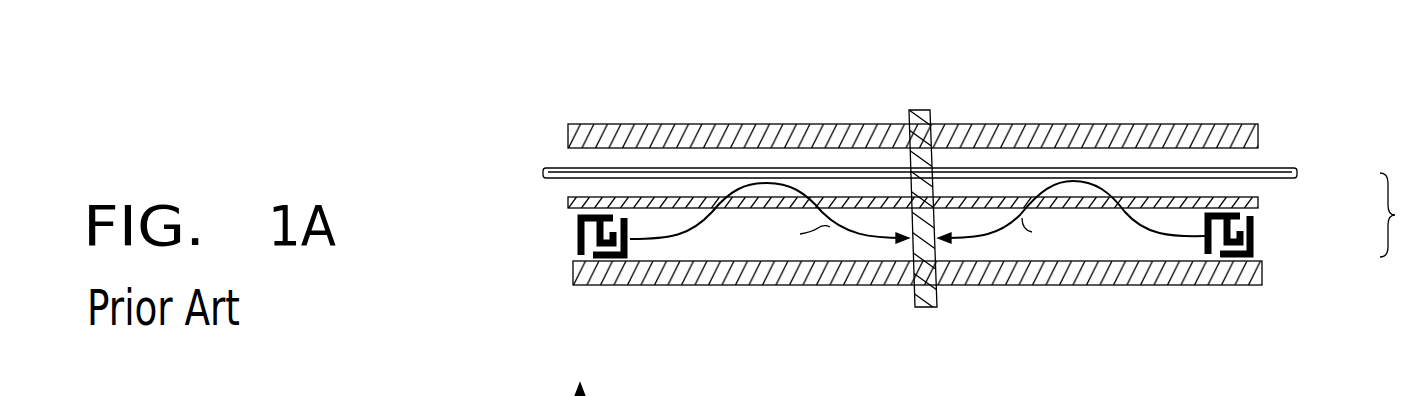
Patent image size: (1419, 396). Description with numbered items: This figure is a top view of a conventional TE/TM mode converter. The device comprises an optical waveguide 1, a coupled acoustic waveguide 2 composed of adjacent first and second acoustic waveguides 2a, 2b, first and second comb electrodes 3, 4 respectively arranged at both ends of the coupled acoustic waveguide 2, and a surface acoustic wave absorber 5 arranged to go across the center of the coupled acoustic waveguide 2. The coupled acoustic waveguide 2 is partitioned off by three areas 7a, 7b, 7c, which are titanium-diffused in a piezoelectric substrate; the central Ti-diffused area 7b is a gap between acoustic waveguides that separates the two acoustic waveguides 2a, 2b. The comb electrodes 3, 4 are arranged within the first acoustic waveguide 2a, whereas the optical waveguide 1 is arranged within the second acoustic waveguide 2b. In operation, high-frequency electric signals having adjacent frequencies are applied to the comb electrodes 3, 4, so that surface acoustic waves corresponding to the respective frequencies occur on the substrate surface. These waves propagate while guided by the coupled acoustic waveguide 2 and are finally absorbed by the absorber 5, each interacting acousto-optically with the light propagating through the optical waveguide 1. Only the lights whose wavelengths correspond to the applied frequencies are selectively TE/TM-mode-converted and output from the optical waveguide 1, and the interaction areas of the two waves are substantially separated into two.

The optical waveguide 1 is at (1276, 168).
The coupled acoustic waveguide 2 is at (1398, 215).
The first acoustic waveguide 2a is at (1253, 213).
The second acoustic waveguide 2b is at (1258, 185).
The first comb electrode 3 is at (1253, 242).
The second comb electrode 4 is at (578, 237).
The surface acoustic wave absorber 5 is at (920, 108).
The Ti-diffused area 7a is at (573, 270).
The central Ti-diffused area 7b is at (568, 205).
The Ti-diffused area 7c is at (568, 135).